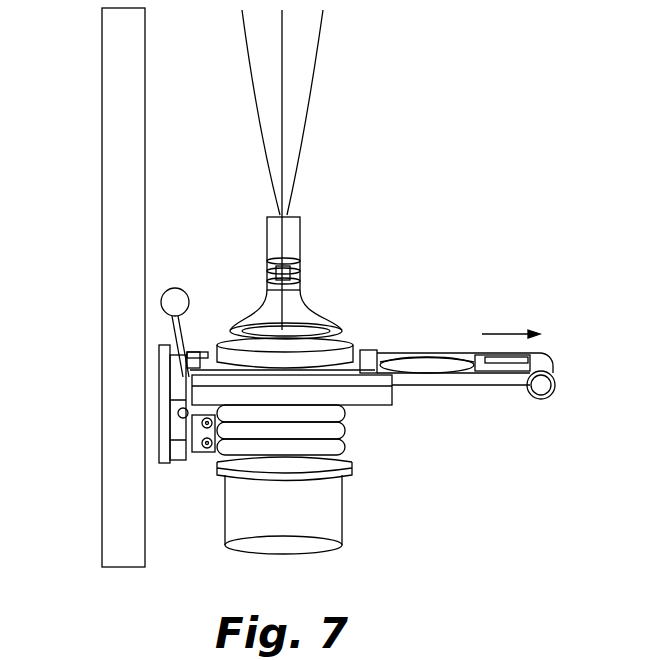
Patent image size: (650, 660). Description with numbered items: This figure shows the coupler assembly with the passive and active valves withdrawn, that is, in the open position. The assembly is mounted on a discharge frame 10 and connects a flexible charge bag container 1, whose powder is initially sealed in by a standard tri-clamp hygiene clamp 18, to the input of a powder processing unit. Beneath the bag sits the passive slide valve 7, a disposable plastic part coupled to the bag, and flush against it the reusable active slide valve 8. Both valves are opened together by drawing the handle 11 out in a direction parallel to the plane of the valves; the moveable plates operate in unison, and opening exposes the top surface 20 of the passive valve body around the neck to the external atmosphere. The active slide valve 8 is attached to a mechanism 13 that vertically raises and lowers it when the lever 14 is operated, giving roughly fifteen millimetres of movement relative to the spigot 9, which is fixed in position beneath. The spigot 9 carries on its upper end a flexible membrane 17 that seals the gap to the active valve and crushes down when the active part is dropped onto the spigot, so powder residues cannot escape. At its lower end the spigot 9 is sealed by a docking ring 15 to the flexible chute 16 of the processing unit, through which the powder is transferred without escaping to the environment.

The container 1 is at (307, 67).
The passive slide valve 7 is at (357, 362).
The active slide valve 8 is at (392, 403).
The spigot 9 is at (341, 438).
The discharge frame 10 is at (110, 507).
The handle 11 is at (557, 373).
The mechanism 13 is at (180, 433).
The lever 14 is at (174, 302).
The docking ring 15 is at (352, 473).
The flexible chute 16 is at (333, 545).
The flexible membrane 17 is at (343, 408).
The tri-clamp hygiene clamp 18 is at (295, 230).
The top surface 20 is at (433, 360).